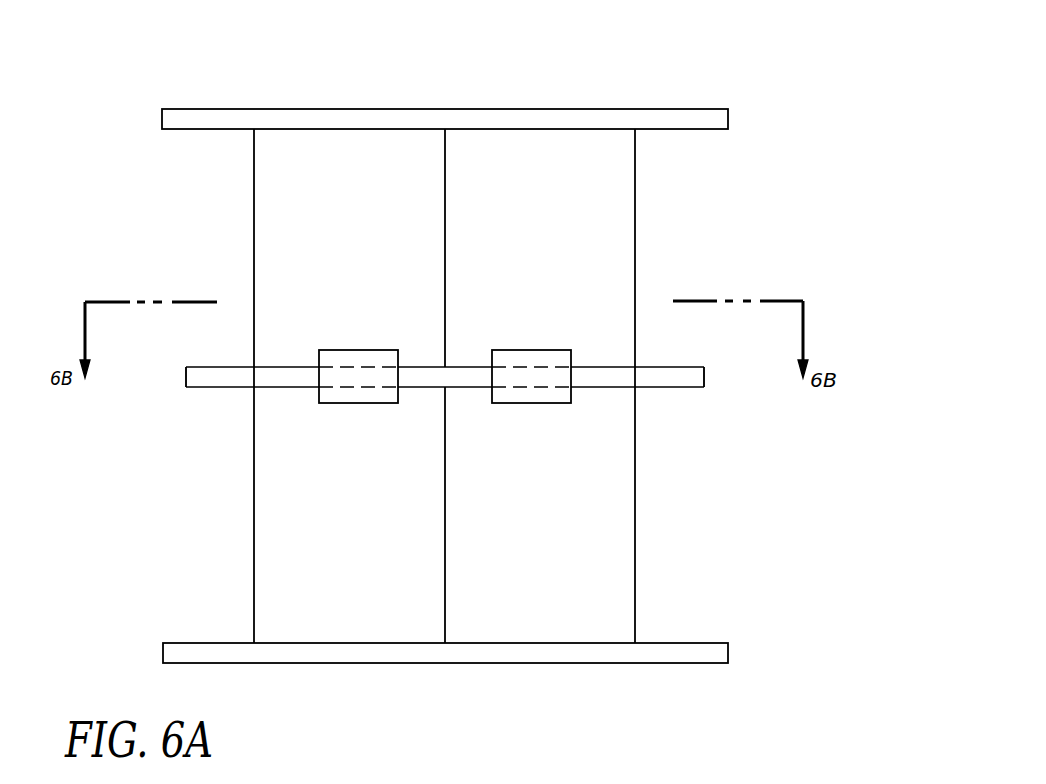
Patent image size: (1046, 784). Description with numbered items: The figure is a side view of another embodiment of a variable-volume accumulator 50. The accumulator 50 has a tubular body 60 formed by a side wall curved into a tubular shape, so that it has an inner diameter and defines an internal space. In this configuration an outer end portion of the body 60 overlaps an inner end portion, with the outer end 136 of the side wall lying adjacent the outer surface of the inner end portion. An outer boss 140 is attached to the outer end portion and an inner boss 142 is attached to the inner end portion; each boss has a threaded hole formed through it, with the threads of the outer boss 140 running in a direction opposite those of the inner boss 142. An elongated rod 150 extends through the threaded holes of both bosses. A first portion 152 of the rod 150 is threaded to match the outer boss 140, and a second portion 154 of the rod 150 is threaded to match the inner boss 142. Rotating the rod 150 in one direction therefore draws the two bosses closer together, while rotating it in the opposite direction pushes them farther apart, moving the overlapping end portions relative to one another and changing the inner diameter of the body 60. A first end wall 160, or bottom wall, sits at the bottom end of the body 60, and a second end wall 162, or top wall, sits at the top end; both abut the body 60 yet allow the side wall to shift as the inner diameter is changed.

The accumulator 50 is at (772, 220).
The tubular body 60 is at (607, 527).
The outer end 136 is at (445, 158).
The outer boss 140 is at (357, 358).
The inner boss 142 is at (543, 355).
The elongated rod 150 is at (213, 366).
The first portion of the rod 152 is at (212, 393).
The second portion of the rod 154 is at (670, 392).
The first end wall 160 is at (690, 652).
The second end wall 162 is at (690, 120).